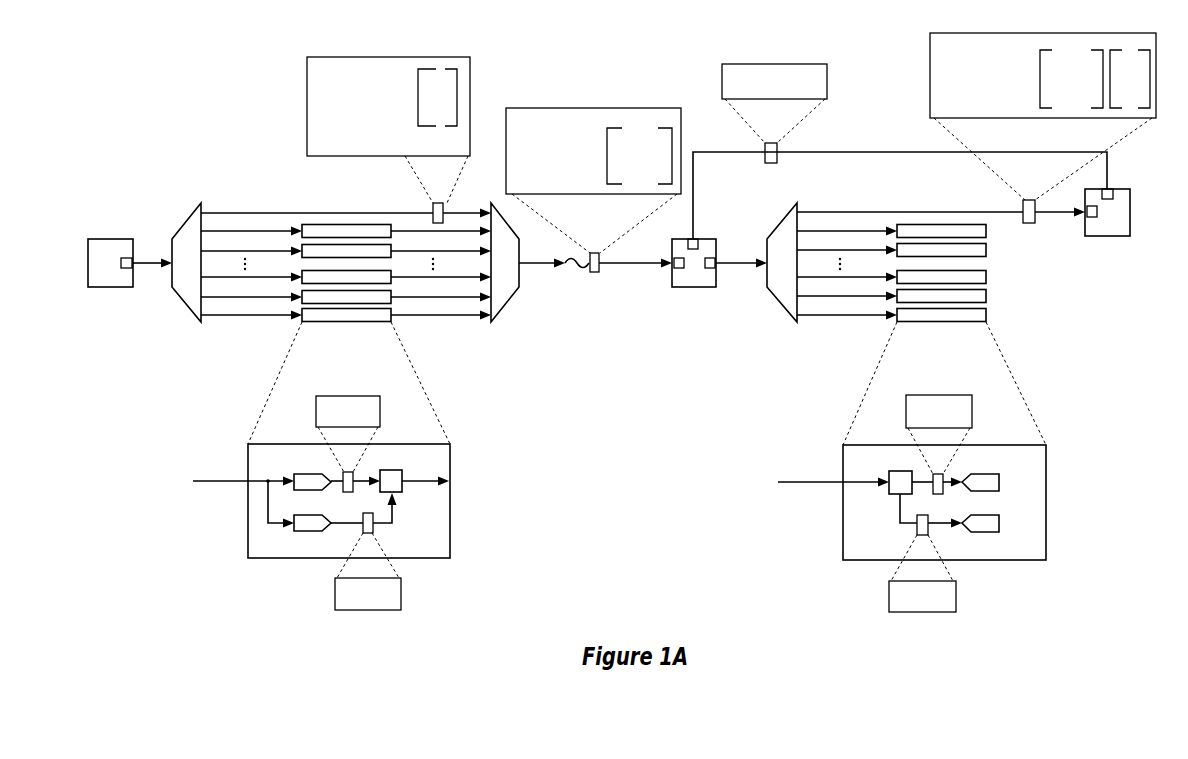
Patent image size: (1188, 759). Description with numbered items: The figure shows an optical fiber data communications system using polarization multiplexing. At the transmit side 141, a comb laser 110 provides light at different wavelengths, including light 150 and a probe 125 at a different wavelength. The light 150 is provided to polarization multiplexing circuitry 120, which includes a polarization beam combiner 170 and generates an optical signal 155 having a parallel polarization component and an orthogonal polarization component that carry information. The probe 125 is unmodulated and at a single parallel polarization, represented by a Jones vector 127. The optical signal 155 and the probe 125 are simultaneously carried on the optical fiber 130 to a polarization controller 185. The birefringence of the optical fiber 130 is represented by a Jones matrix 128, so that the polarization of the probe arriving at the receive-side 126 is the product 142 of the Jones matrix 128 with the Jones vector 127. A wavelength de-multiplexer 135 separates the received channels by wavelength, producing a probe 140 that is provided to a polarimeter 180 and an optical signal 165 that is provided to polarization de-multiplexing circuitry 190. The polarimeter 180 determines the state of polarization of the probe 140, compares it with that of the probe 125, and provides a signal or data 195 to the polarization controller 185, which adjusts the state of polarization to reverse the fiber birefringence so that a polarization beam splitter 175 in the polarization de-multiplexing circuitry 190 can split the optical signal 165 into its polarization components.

The comb laser 110 is at (118, 240).
The polarization multiplexing circuitry 120 is at (385, 323).
The probe 125 is at (408, 212).
The receive-side 126 is at (328, 191).
The Jones vector 127 is at (455, 57).
The Jones matrix 128 is at (673, 108).
The optical fiber 130 is at (600, 260).
The wavelength de-multiplexer 135 is at (793, 318).
The probe 140 is at (932, 212).
The transmit side 141 is at (850, 193).
The product 142 is at (1135, 33).
The light 150 is at (280, 316).
The optical signal 155 is at (470, 320).
The optical signal 165 is at (873, 316).
The polarization beam combiner 170 is at (393, 470).
The polarization beam splitter 175 is at (892, 494).
The polarimeter 180 is at (1120, 237).
The polarization controller 185 is at (705, 288).
The polarization de-multiplexing circuitry 190 is at (975, 323).
The signal or data 195 is at (935, 152).